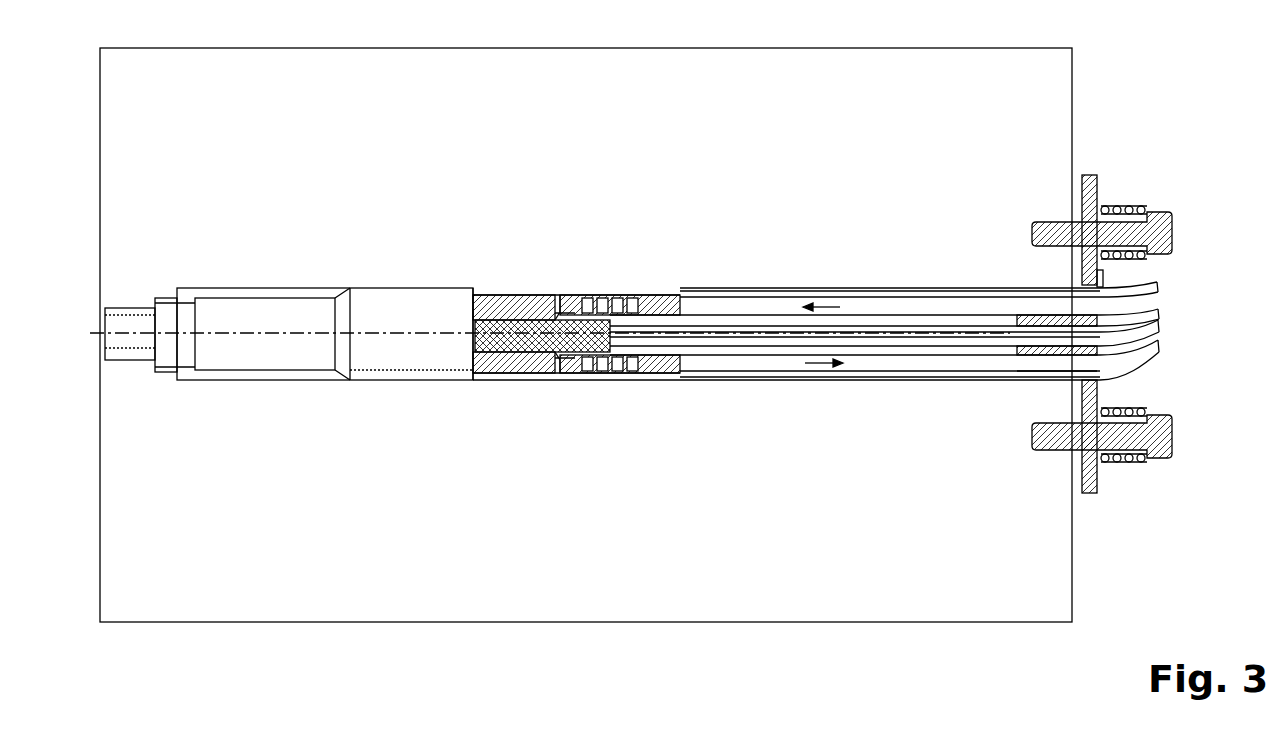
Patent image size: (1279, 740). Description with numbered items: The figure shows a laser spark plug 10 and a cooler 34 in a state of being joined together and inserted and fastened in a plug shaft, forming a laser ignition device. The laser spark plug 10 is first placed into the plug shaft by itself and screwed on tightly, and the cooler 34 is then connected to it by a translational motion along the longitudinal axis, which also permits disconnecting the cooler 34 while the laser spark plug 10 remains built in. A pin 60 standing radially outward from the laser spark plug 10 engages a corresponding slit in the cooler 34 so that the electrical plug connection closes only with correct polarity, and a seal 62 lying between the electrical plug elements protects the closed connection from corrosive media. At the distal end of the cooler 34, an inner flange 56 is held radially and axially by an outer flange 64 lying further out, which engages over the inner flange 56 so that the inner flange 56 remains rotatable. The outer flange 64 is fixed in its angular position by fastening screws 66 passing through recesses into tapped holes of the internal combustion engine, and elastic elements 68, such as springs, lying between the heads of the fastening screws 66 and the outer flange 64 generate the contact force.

The laser spark plug 10 is at (384, 489).
The cooler 34 is at (765, 489).
The flange 56 is at (1055, 379).
The pin 60 is at (533, 376).
The seal 62 is at (535, 332).
The outer flange 64 is at (1091, 178).
The fastening screw 66 is at (1183, 232).
The elastic elements 68 is at (1125, 205).